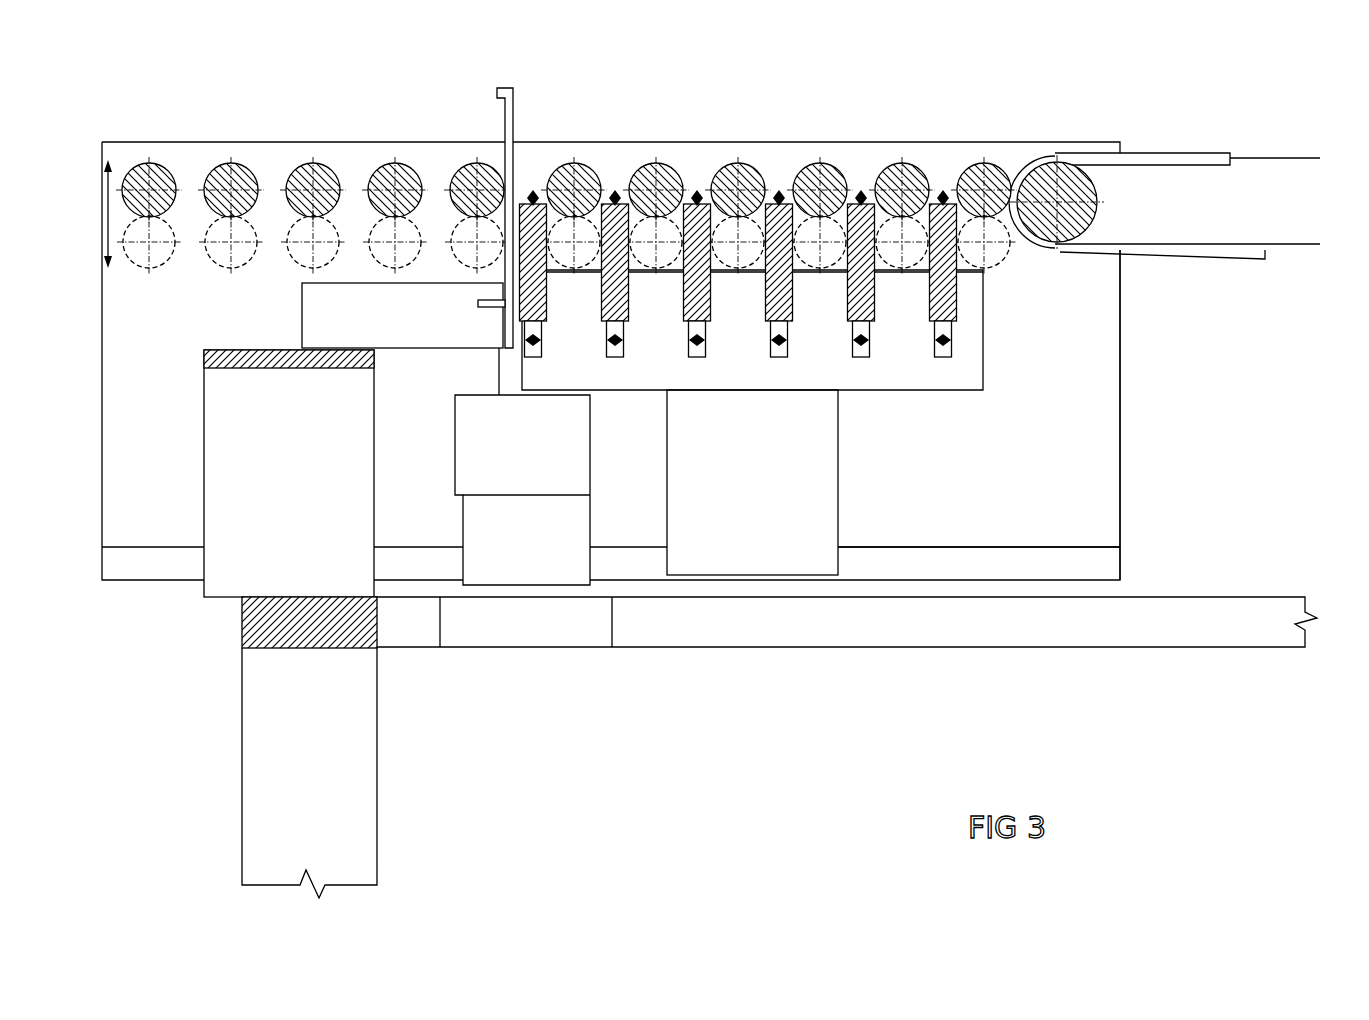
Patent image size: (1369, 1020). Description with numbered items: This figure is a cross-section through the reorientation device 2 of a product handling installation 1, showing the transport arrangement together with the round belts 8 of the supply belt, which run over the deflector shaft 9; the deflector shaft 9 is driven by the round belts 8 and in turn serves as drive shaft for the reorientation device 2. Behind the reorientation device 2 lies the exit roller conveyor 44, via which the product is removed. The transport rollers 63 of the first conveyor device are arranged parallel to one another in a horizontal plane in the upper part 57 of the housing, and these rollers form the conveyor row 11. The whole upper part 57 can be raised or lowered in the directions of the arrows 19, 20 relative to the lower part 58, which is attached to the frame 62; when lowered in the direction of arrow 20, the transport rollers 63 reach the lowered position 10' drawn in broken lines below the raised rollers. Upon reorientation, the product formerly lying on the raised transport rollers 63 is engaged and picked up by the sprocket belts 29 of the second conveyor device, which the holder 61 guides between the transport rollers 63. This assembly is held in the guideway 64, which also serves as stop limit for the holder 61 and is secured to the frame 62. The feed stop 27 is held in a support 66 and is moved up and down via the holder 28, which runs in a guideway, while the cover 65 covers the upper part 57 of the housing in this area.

The apparatus 1 is at (1232, 146).
The reorientation device 2 is at (900, 130).
The round belt 8 is at (1170, 157).
The deflector shaft 9 is at (1070, 185).
The lowered position of the first conveyor device 10' is at (793, 278).
The right roller group 11 is at (625, 185).
The arrow (raising direction) 19 is at (131, 178).
The arrow (lowering direction) 20 is at (126, 244).
The feed stop 27 is at (508, 125).
The holder 28 is at (500, 370).
The sprocket belts 29 is at (613, 196).
The exit roller conveyor 44 is at (307, 135).
The upper part of the housing 57 is at (1095, 418).
The lower part of the housing 58 is at (1103, 565).
The holder 61 is at (765, 290).
The frame 62 is at (228, 462).
The transport rollers 63 is at (385, 177).
The guideway 64 is at (975, 350).
The cover 65 is at (485, 448).
The support 66 is at (318, 317).